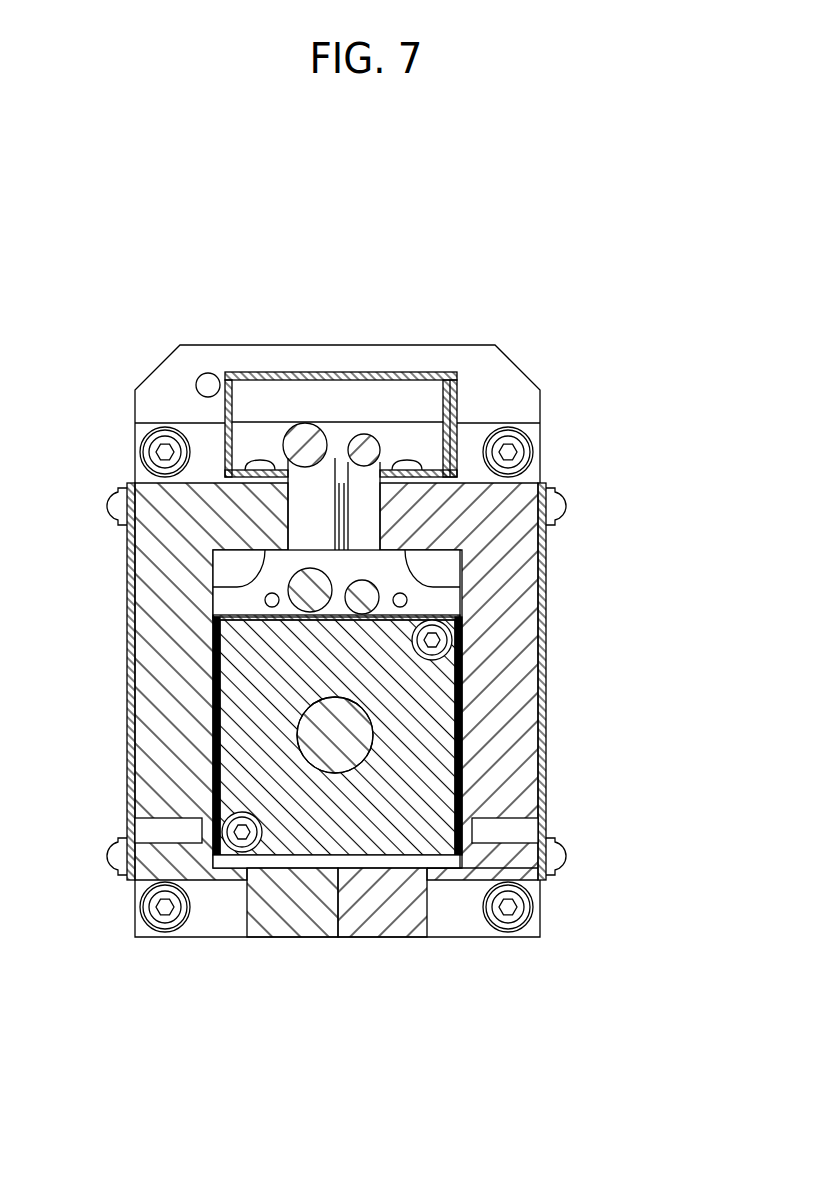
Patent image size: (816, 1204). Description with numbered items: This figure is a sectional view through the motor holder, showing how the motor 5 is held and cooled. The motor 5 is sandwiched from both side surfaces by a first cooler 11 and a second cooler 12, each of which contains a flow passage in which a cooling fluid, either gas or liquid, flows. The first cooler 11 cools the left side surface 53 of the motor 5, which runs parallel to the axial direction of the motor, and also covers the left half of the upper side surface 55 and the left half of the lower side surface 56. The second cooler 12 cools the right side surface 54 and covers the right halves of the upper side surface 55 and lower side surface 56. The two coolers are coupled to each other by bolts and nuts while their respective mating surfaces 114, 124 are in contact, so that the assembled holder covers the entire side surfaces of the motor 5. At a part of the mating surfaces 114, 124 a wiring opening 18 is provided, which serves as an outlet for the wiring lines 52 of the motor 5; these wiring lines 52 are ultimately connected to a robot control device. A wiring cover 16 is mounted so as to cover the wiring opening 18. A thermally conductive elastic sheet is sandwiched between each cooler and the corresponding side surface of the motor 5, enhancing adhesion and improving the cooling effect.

The motor 5 is at (322, 835).
The first cooler 11 is at (167, 680).
The second cooler 12 is at (518, 703).
The wiring cover 16 is at (380, 370).
The wiring opening 18 is at (387, 507).
The wiring lines 52 is at (355, 447).
The left side surface 53 is at (215, 738).
The right side surface 54 is at (463, 732).
The upper side surface 55 is at (425, 613).
The lower side surface 56 is at (384, 856).
The mating surface 114 is at (340, 905).
The mating surface 124 is at (337, 906).